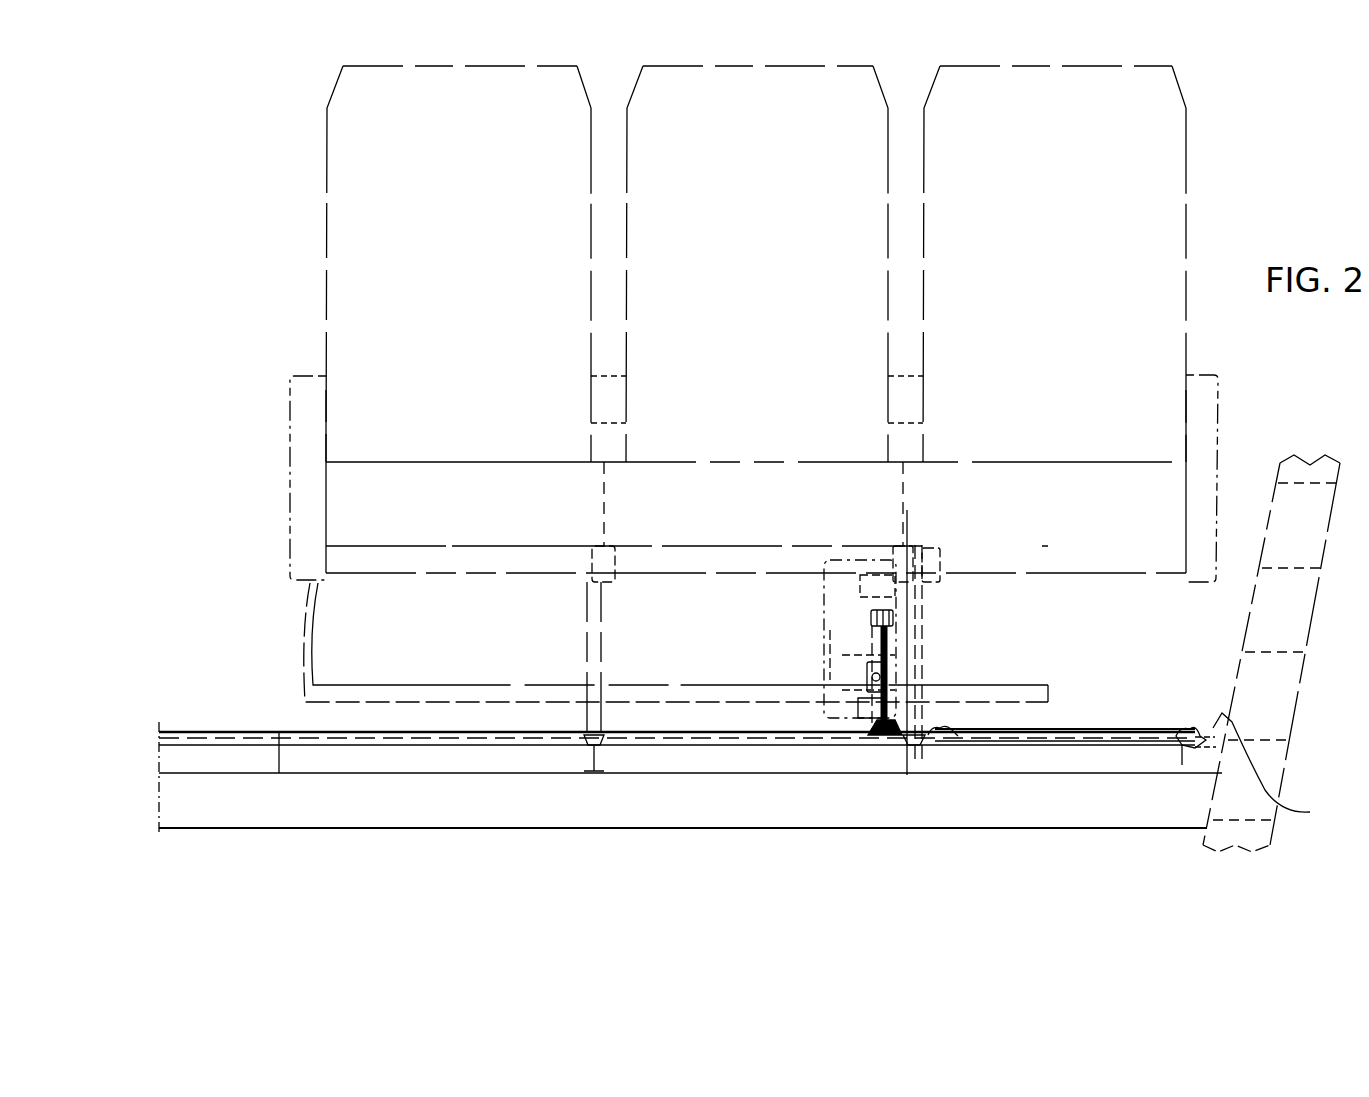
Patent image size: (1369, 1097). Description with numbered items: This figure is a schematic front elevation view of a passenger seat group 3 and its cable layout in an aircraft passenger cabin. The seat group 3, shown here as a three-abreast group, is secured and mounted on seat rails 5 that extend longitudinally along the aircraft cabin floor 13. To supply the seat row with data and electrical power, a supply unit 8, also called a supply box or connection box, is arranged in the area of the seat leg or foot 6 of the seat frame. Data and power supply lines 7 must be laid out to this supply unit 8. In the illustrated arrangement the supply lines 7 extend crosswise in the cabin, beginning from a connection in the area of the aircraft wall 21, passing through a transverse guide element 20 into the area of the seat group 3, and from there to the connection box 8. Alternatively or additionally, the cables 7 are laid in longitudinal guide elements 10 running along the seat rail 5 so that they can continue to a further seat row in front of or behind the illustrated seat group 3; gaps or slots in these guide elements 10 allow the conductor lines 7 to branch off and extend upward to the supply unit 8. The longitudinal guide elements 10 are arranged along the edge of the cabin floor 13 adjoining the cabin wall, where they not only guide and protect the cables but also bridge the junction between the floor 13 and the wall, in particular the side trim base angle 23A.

The passenger seat group 3 is at (300, 198).
The seat rail 5 is at (590, 752).
The seat leg or foot 6 is at (917, 670).
The data and power supply lines 7 is at (870, 656).
The supply unit 8 is at (865, 606).
The longitudinal guide element 10 is at (889, 750).
The aircraft cabin floor 13 is at (224, 758).
The transverse guide element 20 is at (1073, 733).
The aircraft wall 21 is at (1283, 771).
The side trim base angle 23A is at (1275, 770).